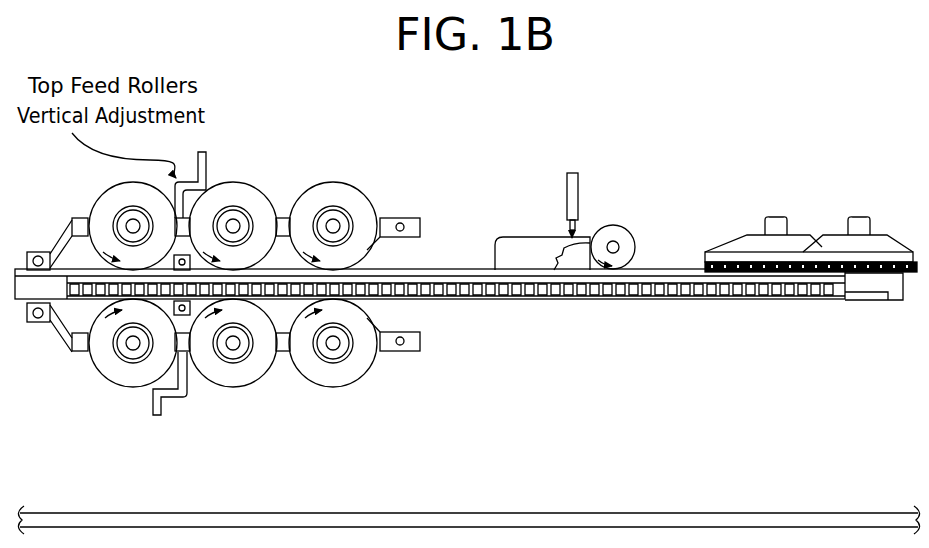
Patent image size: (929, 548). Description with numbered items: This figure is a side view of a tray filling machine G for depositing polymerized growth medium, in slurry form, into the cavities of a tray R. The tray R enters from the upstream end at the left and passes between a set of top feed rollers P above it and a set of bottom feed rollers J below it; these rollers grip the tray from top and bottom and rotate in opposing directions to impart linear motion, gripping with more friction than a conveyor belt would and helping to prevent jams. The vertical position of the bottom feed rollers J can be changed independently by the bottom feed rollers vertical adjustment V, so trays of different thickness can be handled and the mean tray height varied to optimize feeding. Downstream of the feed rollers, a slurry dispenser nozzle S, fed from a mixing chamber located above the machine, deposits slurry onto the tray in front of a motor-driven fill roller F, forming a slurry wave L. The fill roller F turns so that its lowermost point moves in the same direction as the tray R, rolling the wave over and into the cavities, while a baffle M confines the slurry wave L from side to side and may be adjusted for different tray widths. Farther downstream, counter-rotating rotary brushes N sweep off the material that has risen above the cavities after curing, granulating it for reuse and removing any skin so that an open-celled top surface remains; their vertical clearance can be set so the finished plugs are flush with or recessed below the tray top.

The top feed rollers P is at (313, 180).
The bottom feed rollers J is at (308, 389).
The bottom feed rollers vertical adjustment V is at (140, 412).
The tray R is at (82, 307).
The baffle M is at (492, 245).
The slurry wave L is at (566, 248).
The slurry dispenser nozzle S is at (581, 182).
The fill roller F is at (619, 223).
The brushes N is at (838, 234).
The tray filling machine G is at (763, 443).